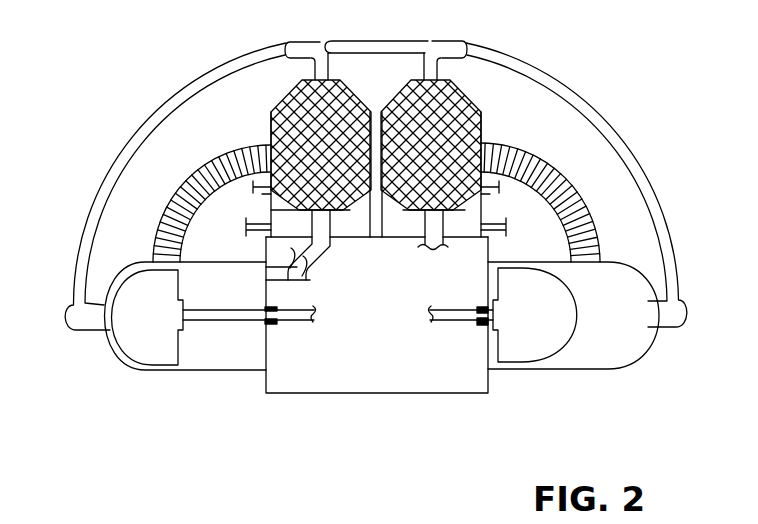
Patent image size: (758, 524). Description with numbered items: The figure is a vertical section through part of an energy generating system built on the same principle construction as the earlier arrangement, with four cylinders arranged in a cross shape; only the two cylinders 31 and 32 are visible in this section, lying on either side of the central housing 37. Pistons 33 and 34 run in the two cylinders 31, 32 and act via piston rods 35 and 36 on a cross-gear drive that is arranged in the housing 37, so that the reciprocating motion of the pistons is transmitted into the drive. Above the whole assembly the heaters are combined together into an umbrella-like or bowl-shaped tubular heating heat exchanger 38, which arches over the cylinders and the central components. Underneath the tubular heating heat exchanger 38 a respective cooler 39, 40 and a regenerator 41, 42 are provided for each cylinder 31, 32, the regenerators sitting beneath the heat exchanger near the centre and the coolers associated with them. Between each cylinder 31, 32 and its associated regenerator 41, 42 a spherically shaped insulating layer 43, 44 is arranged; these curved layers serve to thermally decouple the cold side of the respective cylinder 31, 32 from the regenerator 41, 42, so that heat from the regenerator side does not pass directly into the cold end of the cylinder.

The cylinder 31 is at (602, 343).
The cylinder 32 is at (195, 372).
The piston 33 is at (532, 338).
The piston 34 is at (137, 340).
The piston rod 35 is at (448, 320).
The piston rod 36 is at (235, 320).
The housing 37 is at (310, 373).
The tubular heating heat exchanger 38 is at (562, 88).
The cooler 39 is at (467, 222).
The cooler 40 is at (281, 222).
The regenerator 41 is at (463, 115).
The regenerator 42 is at (289, 112).
The insulating layer 43 is at (577, 233).
The insulating layer 44 is at (167, 210).